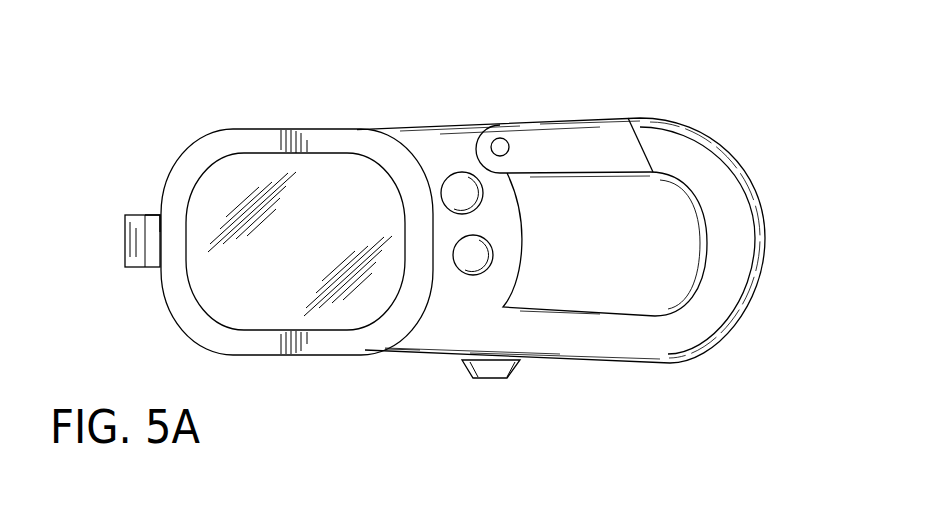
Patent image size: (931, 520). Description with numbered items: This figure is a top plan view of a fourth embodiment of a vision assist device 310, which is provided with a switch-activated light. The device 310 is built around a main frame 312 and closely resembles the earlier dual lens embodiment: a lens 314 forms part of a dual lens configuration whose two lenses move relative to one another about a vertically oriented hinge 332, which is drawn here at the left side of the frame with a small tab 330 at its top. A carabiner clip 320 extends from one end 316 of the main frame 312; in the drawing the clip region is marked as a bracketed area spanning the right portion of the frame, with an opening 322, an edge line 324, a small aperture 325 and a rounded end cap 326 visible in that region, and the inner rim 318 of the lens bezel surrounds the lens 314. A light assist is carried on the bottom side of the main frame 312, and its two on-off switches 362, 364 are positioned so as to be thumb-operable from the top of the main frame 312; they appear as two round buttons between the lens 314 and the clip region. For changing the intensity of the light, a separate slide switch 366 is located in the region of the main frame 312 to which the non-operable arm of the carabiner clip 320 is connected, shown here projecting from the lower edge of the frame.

The device 310 is at (414, 373).
The main frame 312 is at (603, 350).
The lens 314 is at (315, 257).
The end of main frame 316 is at (257, 138).
The inner ring 318 is at (372, 170).
The carabiner clip 320 is at (762, 68).
The cover window opening 322 is at (697, 150).
The cover edge 324 is at (603, 148).
The aperture 325 is at (491, 146).
The end cap 326 is at (717, 250).
The connector tab top 330 is at (158, 222).
The hinge 332 is at (132, 255).
The on-off switch 362 is at (480, 257).
The on-off switch 364 is at (474, 195).
The slide switch 366 is at (495, 368).